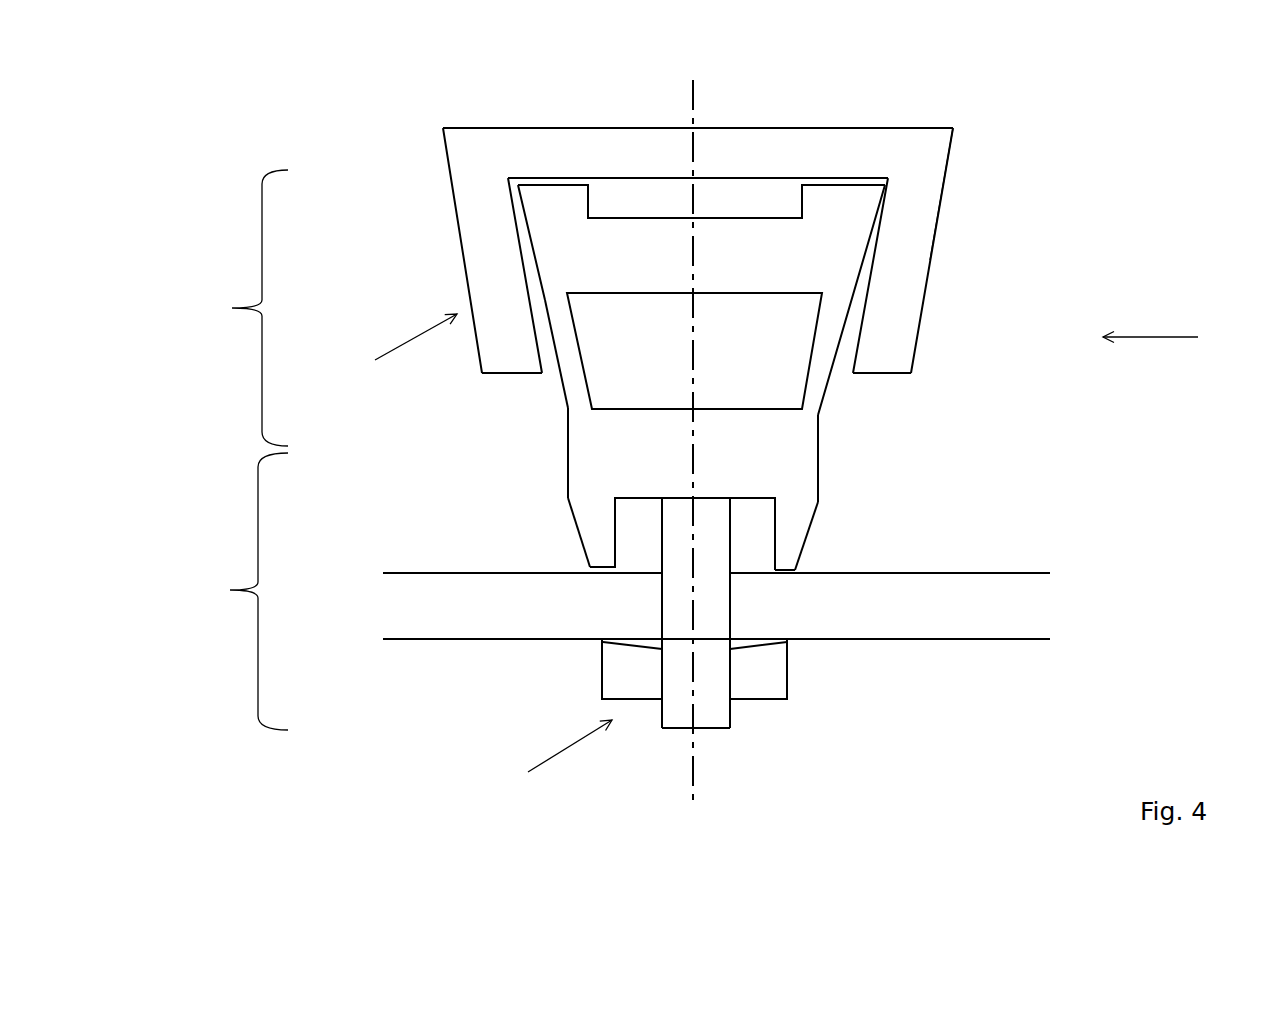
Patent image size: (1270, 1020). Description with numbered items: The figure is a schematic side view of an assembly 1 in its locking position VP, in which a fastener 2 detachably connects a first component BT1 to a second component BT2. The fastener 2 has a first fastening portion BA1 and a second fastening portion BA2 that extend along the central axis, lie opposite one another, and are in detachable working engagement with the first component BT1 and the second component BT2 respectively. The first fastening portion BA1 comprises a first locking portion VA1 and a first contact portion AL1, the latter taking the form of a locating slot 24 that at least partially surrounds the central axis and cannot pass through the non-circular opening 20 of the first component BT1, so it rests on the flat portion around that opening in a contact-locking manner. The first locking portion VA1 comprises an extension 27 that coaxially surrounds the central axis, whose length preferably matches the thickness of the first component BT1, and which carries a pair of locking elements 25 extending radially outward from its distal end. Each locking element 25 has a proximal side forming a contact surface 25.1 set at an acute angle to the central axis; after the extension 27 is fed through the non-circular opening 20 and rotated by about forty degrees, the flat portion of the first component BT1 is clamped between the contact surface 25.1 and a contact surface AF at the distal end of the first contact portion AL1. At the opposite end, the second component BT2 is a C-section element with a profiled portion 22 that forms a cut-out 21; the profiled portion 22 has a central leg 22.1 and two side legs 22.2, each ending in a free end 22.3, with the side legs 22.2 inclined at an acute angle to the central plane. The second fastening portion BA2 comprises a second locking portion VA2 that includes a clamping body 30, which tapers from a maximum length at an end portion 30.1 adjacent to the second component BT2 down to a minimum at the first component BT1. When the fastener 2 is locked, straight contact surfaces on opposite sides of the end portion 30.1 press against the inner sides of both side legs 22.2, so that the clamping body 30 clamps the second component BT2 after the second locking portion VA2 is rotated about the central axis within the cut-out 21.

The assembly 1 is at (290, 125).
The fastener 2 is at (773, 466).
The non-circular opening 20 is at (659, 598).
The cut-out 21 is at (550, 365).
The profiled portion 22 is at (425, 217).
The central leg 22.1 is at (645, 162).
The side legs 22.2 is at (488, 278).
The free end 22.3 is at (493, 383).
The locating slot 24 is at (815, 533).
The locking elements 25 is at (613, 672).
The contact surface 25.1 is at (793, 645).
The extension 27 is at (712, 718).
The clamping body 30 is at (847, 263).
The end portion 30.1 is at (887, 186).
The first component BT1 is at (413, 618).
The second component BT2 is at (965, 150).
The first fastening portion BA1 is at (228, 591).
The second fastening portion BA2 is at (219, 308).
The first locking portion VA1 is at (548, 766).
The second locking portion VA2 is at (396, 358).
The first contact portion AL1 is at (570, 533).
The contact surface AF is at (792, 568).
The locking position VP is at (1174, 339).